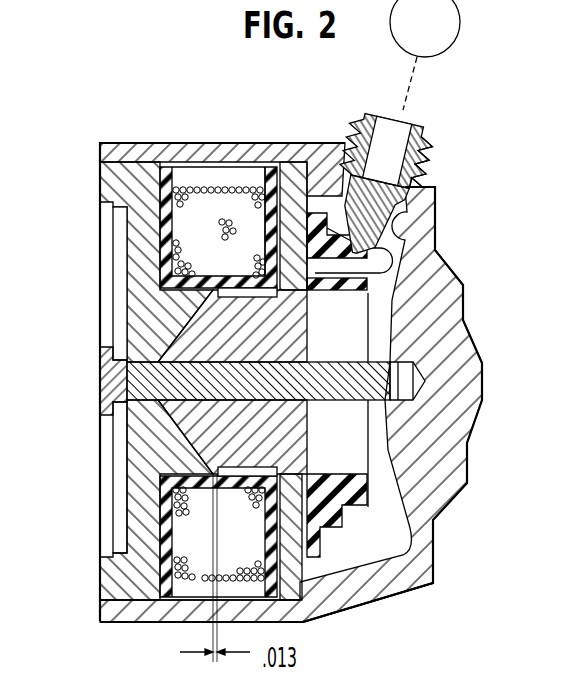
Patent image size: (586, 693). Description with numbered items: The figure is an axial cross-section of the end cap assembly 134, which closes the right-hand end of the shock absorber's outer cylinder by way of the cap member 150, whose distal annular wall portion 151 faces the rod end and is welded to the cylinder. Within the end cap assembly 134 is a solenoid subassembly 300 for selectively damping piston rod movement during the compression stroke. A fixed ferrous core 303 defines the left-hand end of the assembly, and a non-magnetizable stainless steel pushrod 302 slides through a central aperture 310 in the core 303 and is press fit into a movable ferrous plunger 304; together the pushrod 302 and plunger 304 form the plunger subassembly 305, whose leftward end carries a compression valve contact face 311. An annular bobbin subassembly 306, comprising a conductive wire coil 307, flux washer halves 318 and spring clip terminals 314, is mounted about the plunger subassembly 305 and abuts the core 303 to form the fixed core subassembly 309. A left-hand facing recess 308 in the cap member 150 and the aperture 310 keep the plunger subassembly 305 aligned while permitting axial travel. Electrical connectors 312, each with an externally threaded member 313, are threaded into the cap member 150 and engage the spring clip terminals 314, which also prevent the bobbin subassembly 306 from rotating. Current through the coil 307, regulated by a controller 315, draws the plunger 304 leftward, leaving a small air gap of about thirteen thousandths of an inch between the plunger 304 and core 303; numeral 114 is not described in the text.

The housing top wall 114 is at (86, 139).
The end cap assembly 134 is at (387, 614).
The cap member 150 is at (455, 267).
The distal annular wall portion 151 is at (133, 622).
The solenoid subassembly 300 is at (92, 182).
The pushrod 302 is at (416, 364).
The ferrous core 303 is at (115, 187).
The plunger 304 is at (467, 287).
The plunger subassembly 305 is at (326, 347).
The bobbin subassembly 306 is at (227, 268).
The conductive wire coil 307 is at (203, 197).
The recess 308 is at (407, 403).
The fixed core subassembly 309 is at (92, 215).
The central aperture 310 is at (112, 368).
The compression valve contact face 311 is at (268, 163).
The electrical connectors 312 is at (390, 110).
The externally threaded member 313 is at (430, 142).
The spring clip terminals 314 is at (438, 250).
The controller 315 is at (439, 34).
The flux washer halves 318 is at (298, 612).